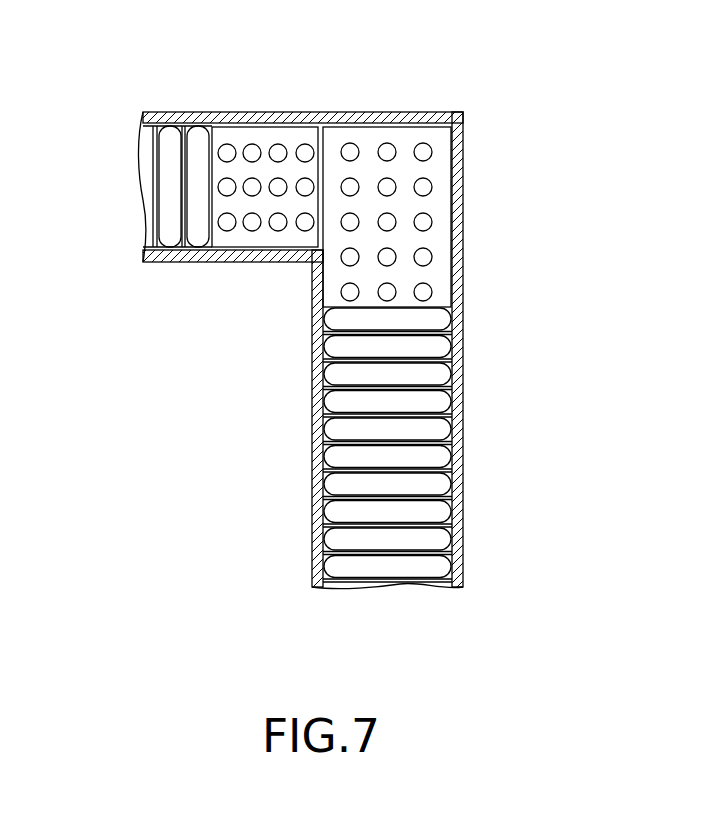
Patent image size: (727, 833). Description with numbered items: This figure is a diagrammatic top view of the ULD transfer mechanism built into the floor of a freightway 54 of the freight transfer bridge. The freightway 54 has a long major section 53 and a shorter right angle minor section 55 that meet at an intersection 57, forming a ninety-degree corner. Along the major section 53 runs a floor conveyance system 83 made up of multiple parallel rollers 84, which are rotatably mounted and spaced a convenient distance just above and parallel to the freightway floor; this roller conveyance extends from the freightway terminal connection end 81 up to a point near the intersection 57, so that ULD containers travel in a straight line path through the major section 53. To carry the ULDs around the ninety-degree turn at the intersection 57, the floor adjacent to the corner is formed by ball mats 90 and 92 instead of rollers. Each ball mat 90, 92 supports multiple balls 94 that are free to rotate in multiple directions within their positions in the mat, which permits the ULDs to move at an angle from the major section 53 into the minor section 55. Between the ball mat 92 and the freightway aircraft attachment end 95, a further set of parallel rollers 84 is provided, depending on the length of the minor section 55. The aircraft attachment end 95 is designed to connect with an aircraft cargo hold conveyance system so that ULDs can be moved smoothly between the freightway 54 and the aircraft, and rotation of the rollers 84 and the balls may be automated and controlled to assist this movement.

The freightway major section 53 is at (457, 388).
The freightway 54 is at (540, 232).
The freightway right angle minor section 55 is at (330, 112).
The intersection 57 is at (310, 263).
The freightway terminal connection end 81 is at (430, 590).
The floor conveyance system 83 is at (378, 605).
The rollers 84 is at (200, 128).
The ball mat 90 is at (435, 162).
The ball mat 92 is at (233, 238).
The balls 94 is at (278, 146).
The freightway aircraft attachment end 95 is at (147, 200).